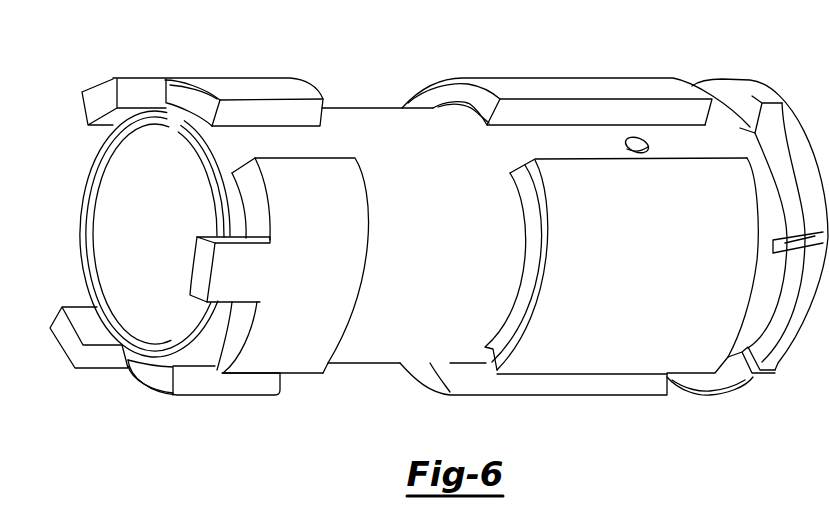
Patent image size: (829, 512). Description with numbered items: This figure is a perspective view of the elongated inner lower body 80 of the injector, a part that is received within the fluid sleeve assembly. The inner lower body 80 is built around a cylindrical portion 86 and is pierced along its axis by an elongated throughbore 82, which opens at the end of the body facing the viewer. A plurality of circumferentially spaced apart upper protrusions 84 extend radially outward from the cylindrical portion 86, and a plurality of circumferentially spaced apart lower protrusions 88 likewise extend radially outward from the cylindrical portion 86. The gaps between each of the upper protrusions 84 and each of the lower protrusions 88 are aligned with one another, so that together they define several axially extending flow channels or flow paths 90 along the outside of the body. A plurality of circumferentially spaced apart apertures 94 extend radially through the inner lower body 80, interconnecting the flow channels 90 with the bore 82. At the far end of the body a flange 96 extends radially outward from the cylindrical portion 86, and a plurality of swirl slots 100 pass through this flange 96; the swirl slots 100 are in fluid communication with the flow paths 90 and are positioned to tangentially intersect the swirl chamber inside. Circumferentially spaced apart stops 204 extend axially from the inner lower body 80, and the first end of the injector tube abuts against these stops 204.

The elongated inner lower body 80 is at (443, 68).
The elongated throughbore 82 is at (113, 197).
The upper protrusions 84 is at (237, 81).
The cylindrical portion 86 is at (383, 120).
The lower protrusions 88 is at (507, 80).
The flow channels 90 is at (294, 148).
The apertures 94 is at (628, 136).
The flange 96 is at (747, 85).
The swirl slots 100 is at (775, 243).
The stops 204 is at (97, 93).